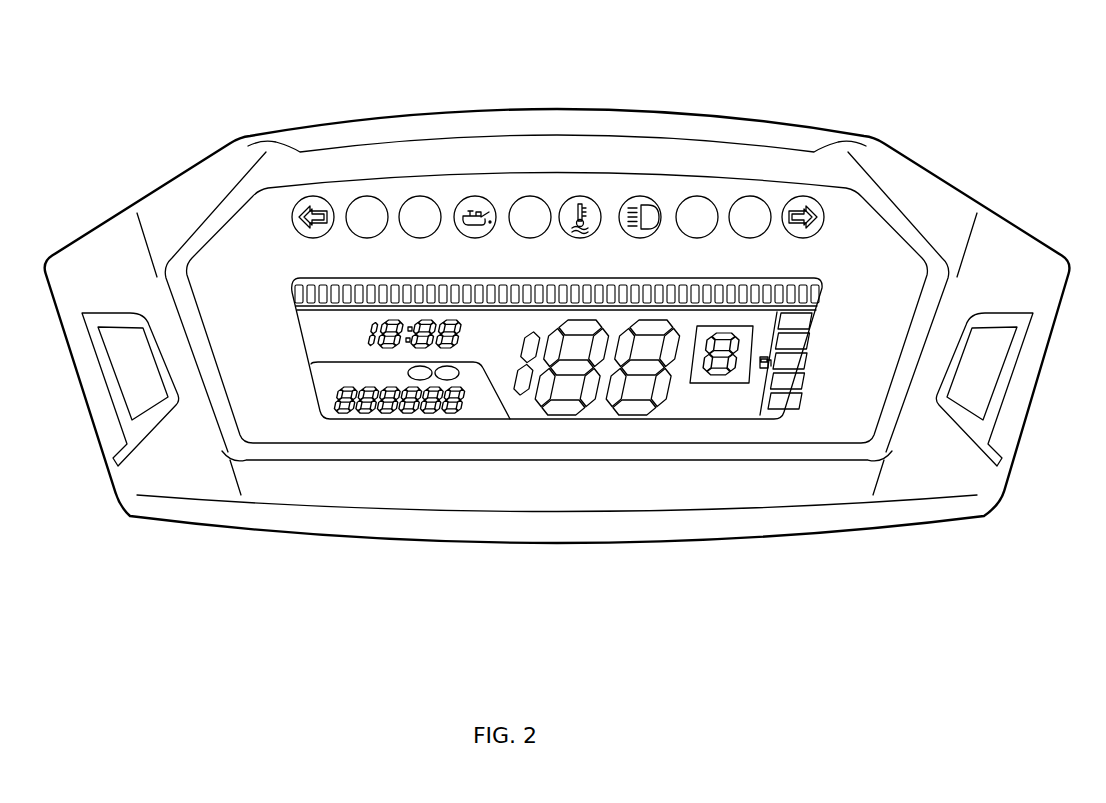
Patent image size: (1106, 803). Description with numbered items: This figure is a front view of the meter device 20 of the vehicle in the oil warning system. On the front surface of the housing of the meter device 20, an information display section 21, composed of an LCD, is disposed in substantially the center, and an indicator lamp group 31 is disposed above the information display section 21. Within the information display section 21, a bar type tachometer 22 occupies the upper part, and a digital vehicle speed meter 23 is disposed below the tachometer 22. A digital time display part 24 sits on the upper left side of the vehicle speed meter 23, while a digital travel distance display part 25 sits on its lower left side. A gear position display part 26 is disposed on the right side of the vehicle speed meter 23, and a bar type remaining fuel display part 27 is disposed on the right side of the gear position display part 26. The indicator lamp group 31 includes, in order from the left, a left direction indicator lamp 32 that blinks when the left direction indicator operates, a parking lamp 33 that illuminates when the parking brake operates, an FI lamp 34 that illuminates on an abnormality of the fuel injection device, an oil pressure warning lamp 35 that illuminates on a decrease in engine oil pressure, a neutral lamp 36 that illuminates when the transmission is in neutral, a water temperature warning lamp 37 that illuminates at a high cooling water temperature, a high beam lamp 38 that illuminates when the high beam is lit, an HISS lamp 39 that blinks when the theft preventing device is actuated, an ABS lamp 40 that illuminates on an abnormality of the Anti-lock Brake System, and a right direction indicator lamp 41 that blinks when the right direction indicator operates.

The meter device 20 is at (931, 160).
The information display section 21 is at (284, 275).
The bar type tachometer 22 is at (357, 292).
The digital vehicle speed meter 23 is at (572, 413).
The digital time display part 24 is at (425, 318).
The digital travel distance display part 25 is at (410, 418).
The gear position display part 26 is at (718, 378).
The bar type remaining fuel display part 27 is at (785, 383).
The indicator lamp group 31 is at (284, 197).
The left direction indicator lamp 32 is at (323, 196).
The parking lamp 33 is at (380, 196).
The FI lamp 34 is at (433, 196).
The oil pressure warning lamp 35 is at (487, 196).
The neutral lamp 36 is at (542, 196).
The water temperature warning lamp 37 is at (572, 196).
The high beam lamp 38 is at (628, 196).
The HISS lamp 39 is at (692, 196).
The ABS lamp 40 is at (750, 196).
The right direction indicator lamp 41 is at (793, 196).